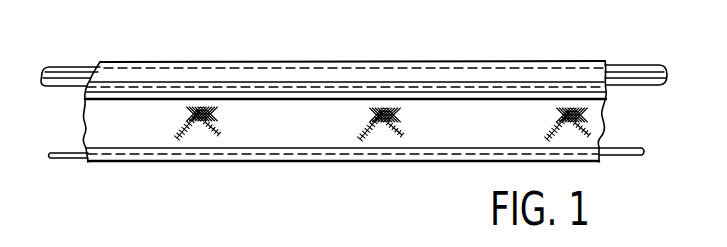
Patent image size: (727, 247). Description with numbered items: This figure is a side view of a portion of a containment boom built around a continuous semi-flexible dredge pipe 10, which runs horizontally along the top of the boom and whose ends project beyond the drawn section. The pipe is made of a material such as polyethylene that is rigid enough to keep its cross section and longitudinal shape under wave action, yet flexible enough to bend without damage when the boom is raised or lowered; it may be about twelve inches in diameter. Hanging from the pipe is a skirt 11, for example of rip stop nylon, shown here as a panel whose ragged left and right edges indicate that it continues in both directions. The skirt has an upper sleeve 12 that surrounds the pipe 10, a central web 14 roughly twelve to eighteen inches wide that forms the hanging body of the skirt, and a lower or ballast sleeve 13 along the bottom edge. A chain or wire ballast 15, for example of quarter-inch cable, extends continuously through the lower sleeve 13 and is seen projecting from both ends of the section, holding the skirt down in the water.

The semi-flexible dredge pipe 10 is at (645, 66).
The skirt 11 is at (596, 128).
The upper sleeve 12 is at (365, 66).
The ballast sleeve 13 is at (370, 163).
The central web 14 is at (97, 127).
The chain or wire ballast 15 is at (65, 159).